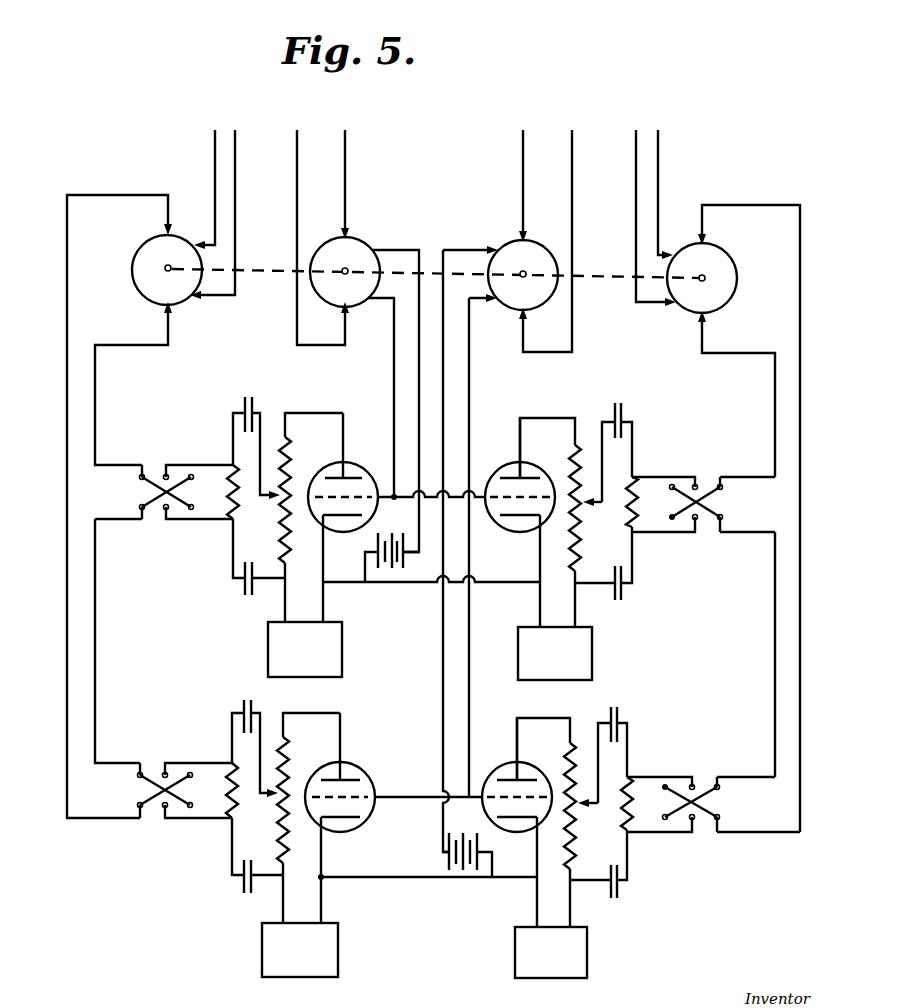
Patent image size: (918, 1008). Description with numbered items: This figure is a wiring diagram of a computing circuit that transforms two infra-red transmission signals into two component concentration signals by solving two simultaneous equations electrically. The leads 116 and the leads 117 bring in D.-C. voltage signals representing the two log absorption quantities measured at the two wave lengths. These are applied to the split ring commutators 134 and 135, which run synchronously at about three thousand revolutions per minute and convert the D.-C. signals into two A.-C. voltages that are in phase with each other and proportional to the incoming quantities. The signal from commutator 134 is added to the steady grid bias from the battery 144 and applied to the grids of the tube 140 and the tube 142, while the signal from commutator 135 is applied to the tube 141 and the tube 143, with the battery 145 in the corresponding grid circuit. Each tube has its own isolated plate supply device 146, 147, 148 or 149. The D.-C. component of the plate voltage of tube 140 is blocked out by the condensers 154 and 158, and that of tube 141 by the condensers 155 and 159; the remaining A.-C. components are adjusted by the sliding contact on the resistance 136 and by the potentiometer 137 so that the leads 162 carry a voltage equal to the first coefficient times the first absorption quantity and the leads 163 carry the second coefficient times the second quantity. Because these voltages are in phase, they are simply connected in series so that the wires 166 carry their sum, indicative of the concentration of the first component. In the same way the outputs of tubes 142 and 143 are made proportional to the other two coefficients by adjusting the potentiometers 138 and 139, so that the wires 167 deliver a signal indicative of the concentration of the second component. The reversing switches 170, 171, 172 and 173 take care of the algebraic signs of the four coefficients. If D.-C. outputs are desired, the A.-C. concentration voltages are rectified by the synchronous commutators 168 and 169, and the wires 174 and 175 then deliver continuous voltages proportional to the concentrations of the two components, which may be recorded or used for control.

The leads 116 is at (300, 126).
The leads 117 is at (528, 126).
The split ring commutator 134 is at (345, 272).
The split ring commutator 135 is at (523, 275).
The resistance 136 is at (584, 524).
The potentiometer 137 is at (581, 838).
The potentiometer 138 is at (277, 523).
The potentiometer 139 is at (278, 823).
The tube 140 is at (503, 465).
The tube 141 is at (502, 766).
The tube 142 is at (355, 463).
The tube 143 is at (355, 762).
The battery 144 is at (391, 546).
The battery 145 is at (446, 862).
The plate supply device 146 is at (555, 653).
The plate supply device 147 is at (551, 952).
The plate supply device 148 is at (305, 649).
The plate supply device 149 is at (300, 950).
The condenser 154 is at (618, 403).
The condenser 155 is at (618, 707).
The condenser 158 is at (617, 603).
The condenser 159 is at (612, 901).
The leads 162 is at (750, 477).
The leads 163 is at (750, 777).
The wires 166 is at (797, 357).
The wires 167 is at (73, 339).
The synchronous commutator 168 is at (702, 278).
The synchronous commutator 169 is at (167, 270).
The reversing switch 170 is at (701, 520).
The reversing switch 171 is at (702, 822).
The reversing switch 172 is at (152, 513).
The reversing switch 173 is at (150, 812).
The wires 174 is at (644, 131).
The wires 175 is at (222, 130).